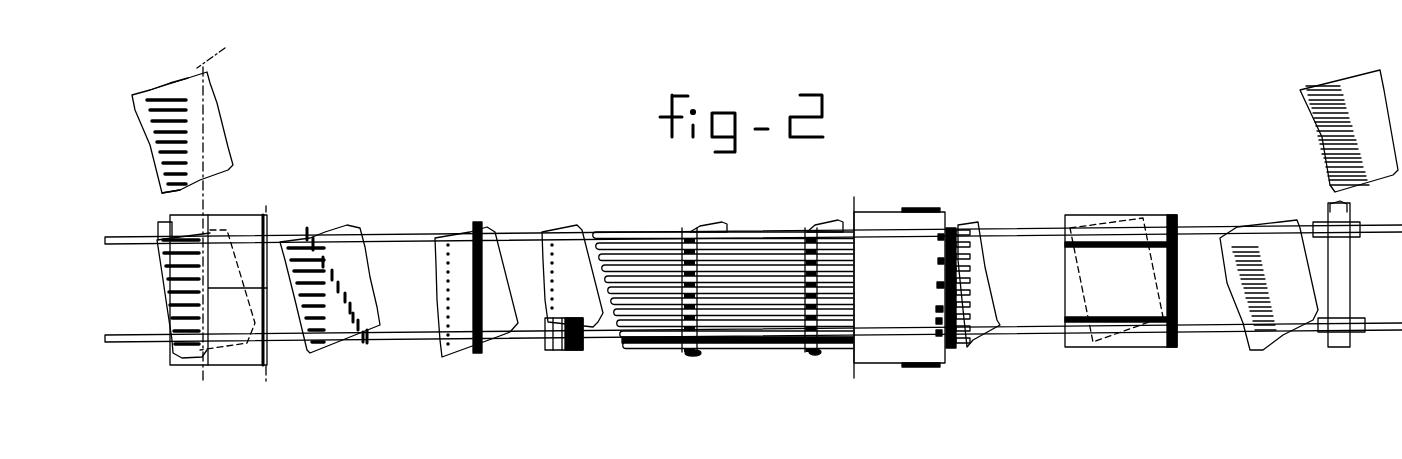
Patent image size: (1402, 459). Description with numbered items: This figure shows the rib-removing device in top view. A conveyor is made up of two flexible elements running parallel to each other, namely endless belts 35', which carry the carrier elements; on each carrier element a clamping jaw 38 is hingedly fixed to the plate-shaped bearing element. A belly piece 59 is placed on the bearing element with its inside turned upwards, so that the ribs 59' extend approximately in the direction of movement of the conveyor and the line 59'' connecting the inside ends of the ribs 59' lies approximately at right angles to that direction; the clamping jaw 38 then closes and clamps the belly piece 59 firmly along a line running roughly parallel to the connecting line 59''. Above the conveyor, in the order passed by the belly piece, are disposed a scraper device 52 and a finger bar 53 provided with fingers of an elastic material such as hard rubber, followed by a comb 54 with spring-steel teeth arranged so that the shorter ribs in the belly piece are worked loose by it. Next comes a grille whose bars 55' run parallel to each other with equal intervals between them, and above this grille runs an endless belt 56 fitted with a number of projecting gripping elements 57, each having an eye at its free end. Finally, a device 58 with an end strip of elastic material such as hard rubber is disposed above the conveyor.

The endless belts 35' is at (753, 279).
The clamping jaw 38 is at (243, 228).
The scraper device 52 is at (326, 250).
The finger bar 53 is at (482, 224).
The comb 54 is at (555, 351).
The bars of the grille 55' is at (723, 274).
The endless belt 56 is at (885, 222).
The gripping elements 57 is at (958, 228).
The device with end strip 58 is at (1122, 232).
The belly piece 59 is at (193, 132).
The ribs 59' is at (150, 123).
The connecting line 59'' is at (210, 42).